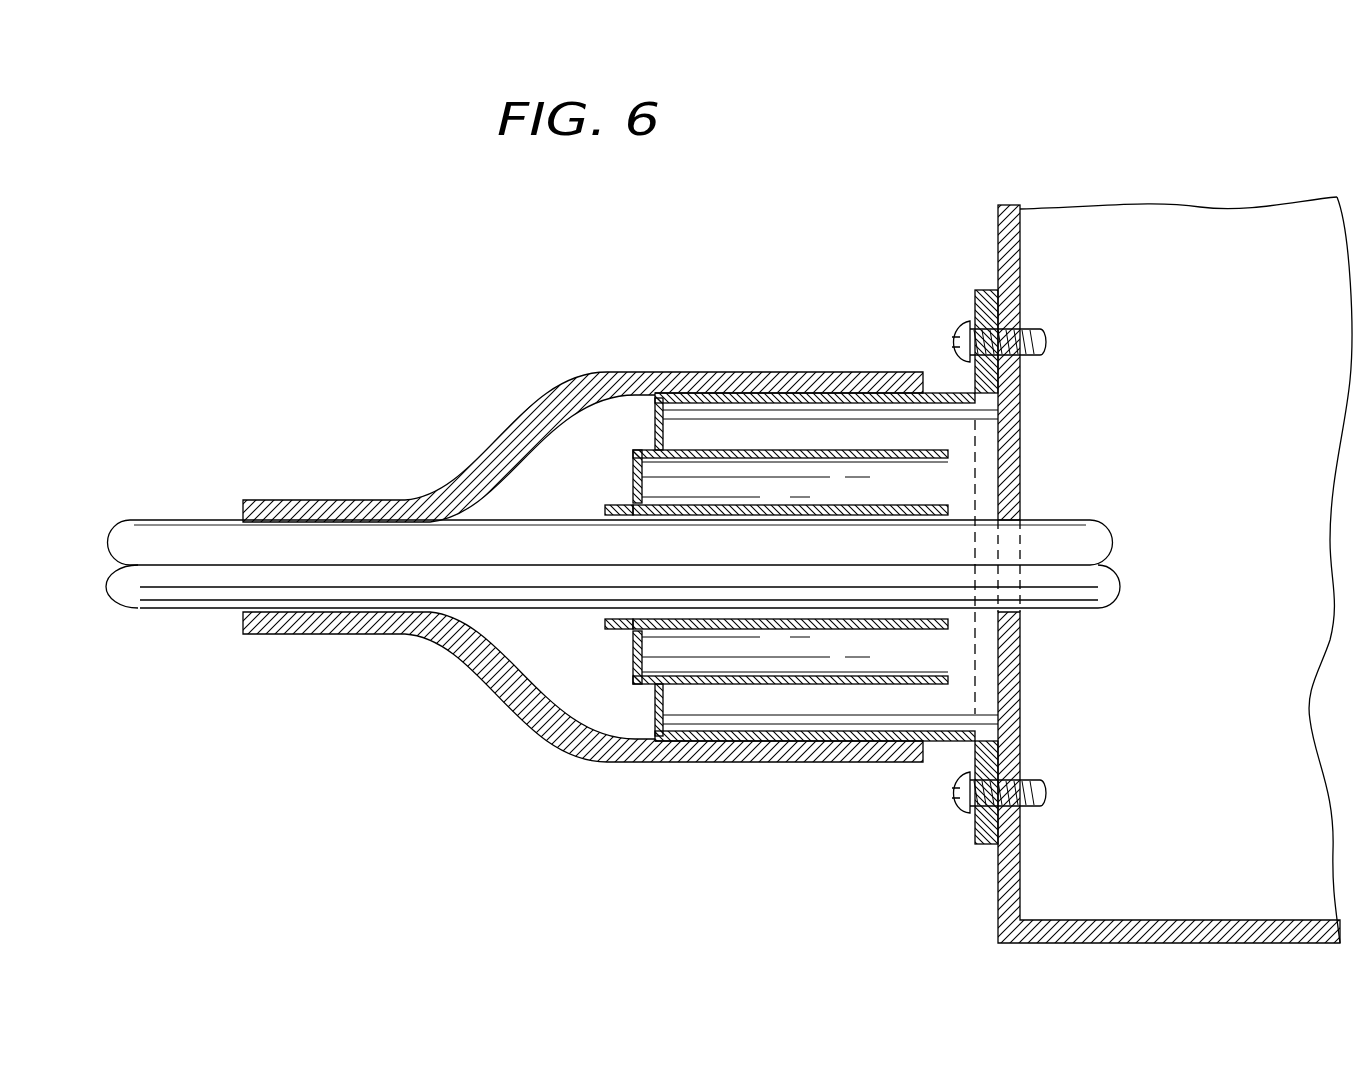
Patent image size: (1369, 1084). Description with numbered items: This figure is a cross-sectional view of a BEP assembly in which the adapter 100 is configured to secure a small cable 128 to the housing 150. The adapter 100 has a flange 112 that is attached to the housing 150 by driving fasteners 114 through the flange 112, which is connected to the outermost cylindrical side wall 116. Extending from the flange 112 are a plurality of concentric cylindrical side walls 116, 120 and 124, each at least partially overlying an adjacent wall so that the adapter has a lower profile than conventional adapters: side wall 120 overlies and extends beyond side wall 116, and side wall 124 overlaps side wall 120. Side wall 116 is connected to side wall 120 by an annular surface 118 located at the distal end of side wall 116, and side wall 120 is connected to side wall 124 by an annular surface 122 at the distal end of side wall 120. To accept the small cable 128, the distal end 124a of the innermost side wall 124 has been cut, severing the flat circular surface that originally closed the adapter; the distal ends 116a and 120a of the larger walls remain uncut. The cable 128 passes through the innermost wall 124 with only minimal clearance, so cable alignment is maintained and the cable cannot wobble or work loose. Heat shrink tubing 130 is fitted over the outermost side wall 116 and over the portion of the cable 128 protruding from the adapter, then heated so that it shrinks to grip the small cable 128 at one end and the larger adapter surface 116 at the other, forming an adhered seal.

The adapter 100 is at (620, 538).
The flange 112 is at (962, 763).
The fasteners 114 is at (956, 326).
The outermost cylindrical side wall 116 is at (737, 390).
The distal end of outermost cylindrical side wall 116a is at (660, 392).
The annular surface 118 is at (654, 412).
The middle cylindrical side wall 120 is at (845, 450).
The distal end of middle cylindrical side wall 120a is at (633, 445).
The annular surface 122 is at (632, 472).
The innermost cylindrical side wall 124 is at (855, 507).
The distal end of innermost cylindrical side wall 124a is at (605, 500).
The small cable 128 is at (175, 520).
The heat shrink tubing 130 is at (290, 500).
The housing 150 is at (998, 226).